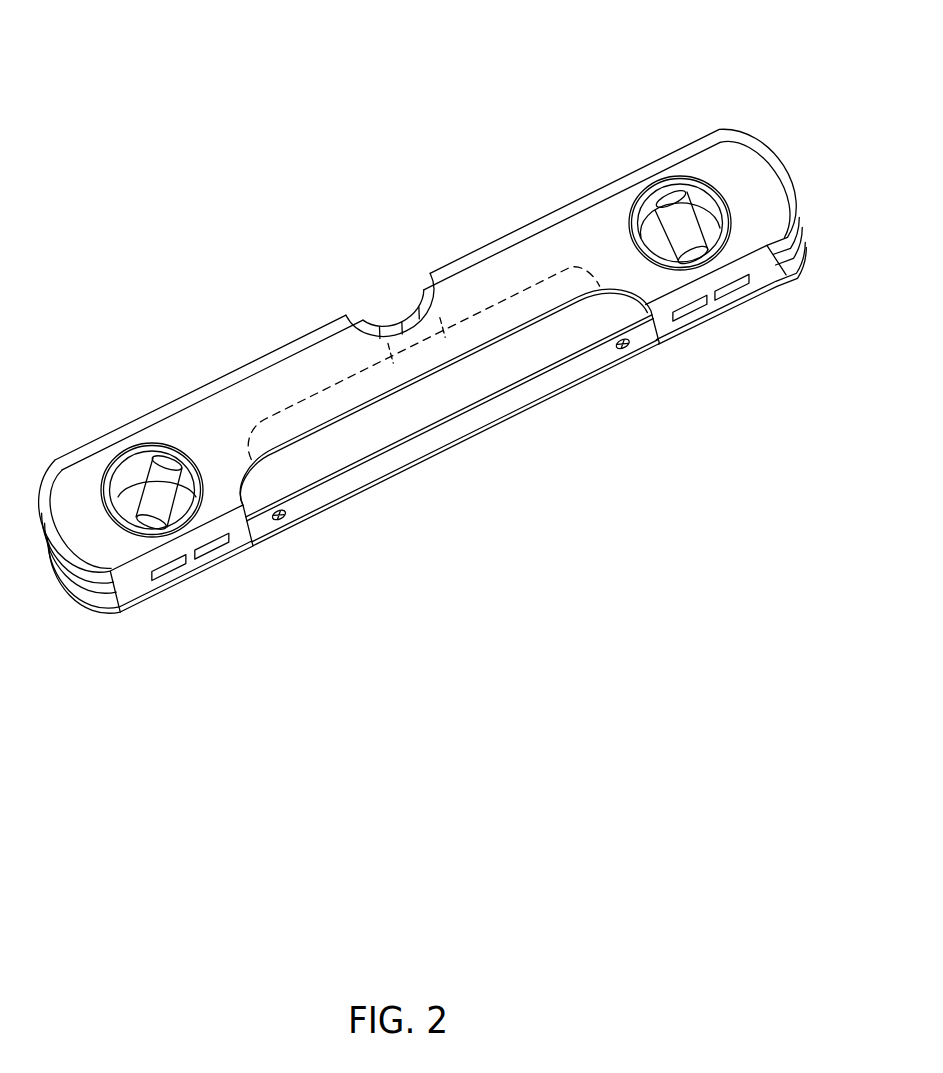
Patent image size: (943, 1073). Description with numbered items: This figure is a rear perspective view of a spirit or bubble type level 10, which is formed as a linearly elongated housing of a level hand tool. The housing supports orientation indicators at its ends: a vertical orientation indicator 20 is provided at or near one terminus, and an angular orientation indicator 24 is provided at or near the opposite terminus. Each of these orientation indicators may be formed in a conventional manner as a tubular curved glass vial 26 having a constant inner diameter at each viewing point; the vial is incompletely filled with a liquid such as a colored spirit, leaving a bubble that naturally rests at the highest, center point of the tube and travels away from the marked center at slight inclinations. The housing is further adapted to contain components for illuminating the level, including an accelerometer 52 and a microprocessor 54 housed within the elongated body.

The level 10 is at (291, 133).
The vertical orientation indicator 20 is at (712, 217).
The angular orientation indicator 24 is at (150, 524).
The tubular curved glass vial 26 is at (388, 312).
The accelerometer 52 is at (315, 413).
The microprocessor 54 is at (502, 320).